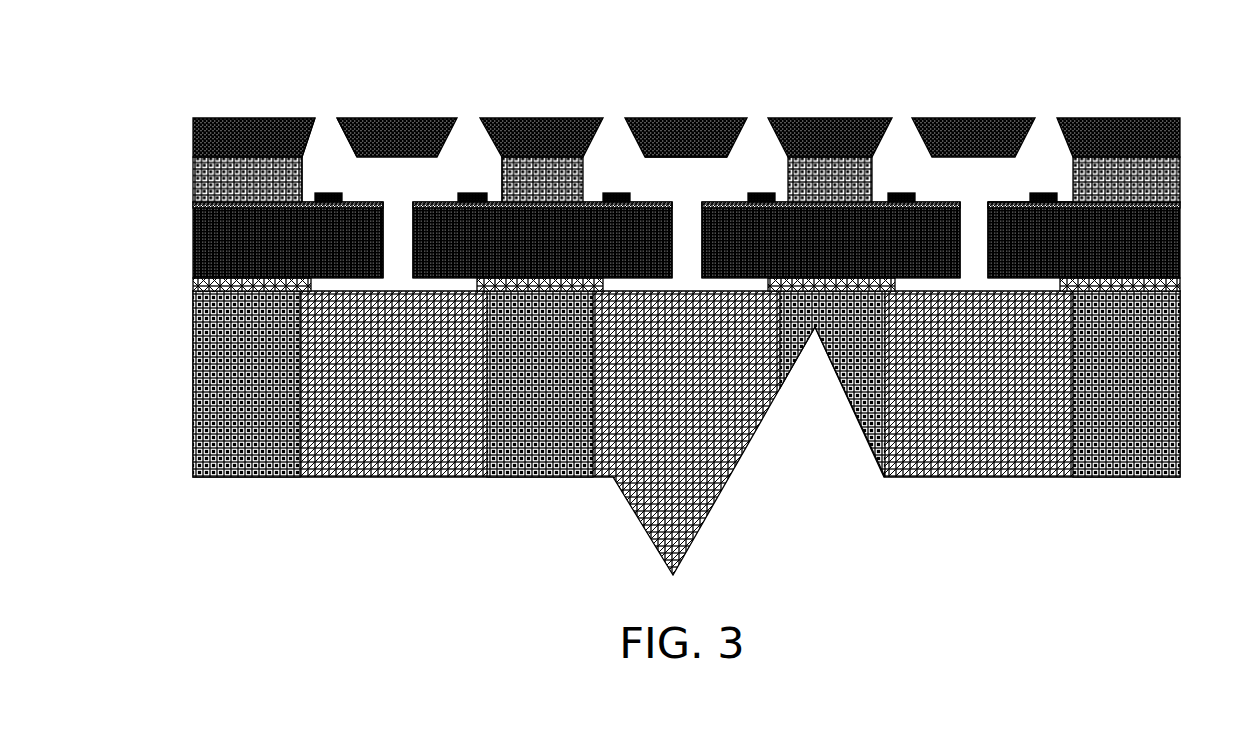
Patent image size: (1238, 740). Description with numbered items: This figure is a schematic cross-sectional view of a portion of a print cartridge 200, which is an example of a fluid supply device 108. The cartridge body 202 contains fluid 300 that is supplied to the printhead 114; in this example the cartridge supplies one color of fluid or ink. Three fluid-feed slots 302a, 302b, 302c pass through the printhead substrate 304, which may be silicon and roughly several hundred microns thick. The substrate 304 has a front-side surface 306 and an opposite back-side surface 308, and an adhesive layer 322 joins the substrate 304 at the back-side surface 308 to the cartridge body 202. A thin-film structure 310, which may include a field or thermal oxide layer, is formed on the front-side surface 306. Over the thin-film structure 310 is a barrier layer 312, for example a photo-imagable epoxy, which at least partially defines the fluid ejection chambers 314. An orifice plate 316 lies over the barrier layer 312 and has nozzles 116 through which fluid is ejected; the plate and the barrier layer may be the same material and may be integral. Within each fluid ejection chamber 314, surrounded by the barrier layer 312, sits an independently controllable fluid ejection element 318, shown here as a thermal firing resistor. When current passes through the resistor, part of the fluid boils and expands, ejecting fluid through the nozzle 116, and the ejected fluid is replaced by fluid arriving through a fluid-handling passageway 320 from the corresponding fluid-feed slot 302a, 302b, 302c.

The fluid supply device 108 is at (213, 72).
The print cartridge 200 is at (222, 103).
The printhead 114 is at (172, 270).
The nozzle 116 is at (323, 115).
The orifice plate 316 is at (230, 147).
The barrier layer 312 is at (227, 192).
The fluid ejection chamber 314 is at (308, 183).
The fluid ejection element 318 is at (478, 190).
The fluid-handling passageway 320 is at (664, 182).
The fluid-feed slot 302a is at (394, 238).
The fluid-feed slot 302b is at (681, 238).
The fluid-feed slot 302c is at (969, 237).
The printhead substrate 304 is at (522, 250).
The front-side surface 306 is at (1086, 203).
The thin-film structure 310 is at (1180, 204).
The back-side surface 308 is at (1153, 280).
The adhesive layer 322 is at (308, 292).
The fluid 300 is at (389, 452).
The cartridge body 202 is at (225, 452).